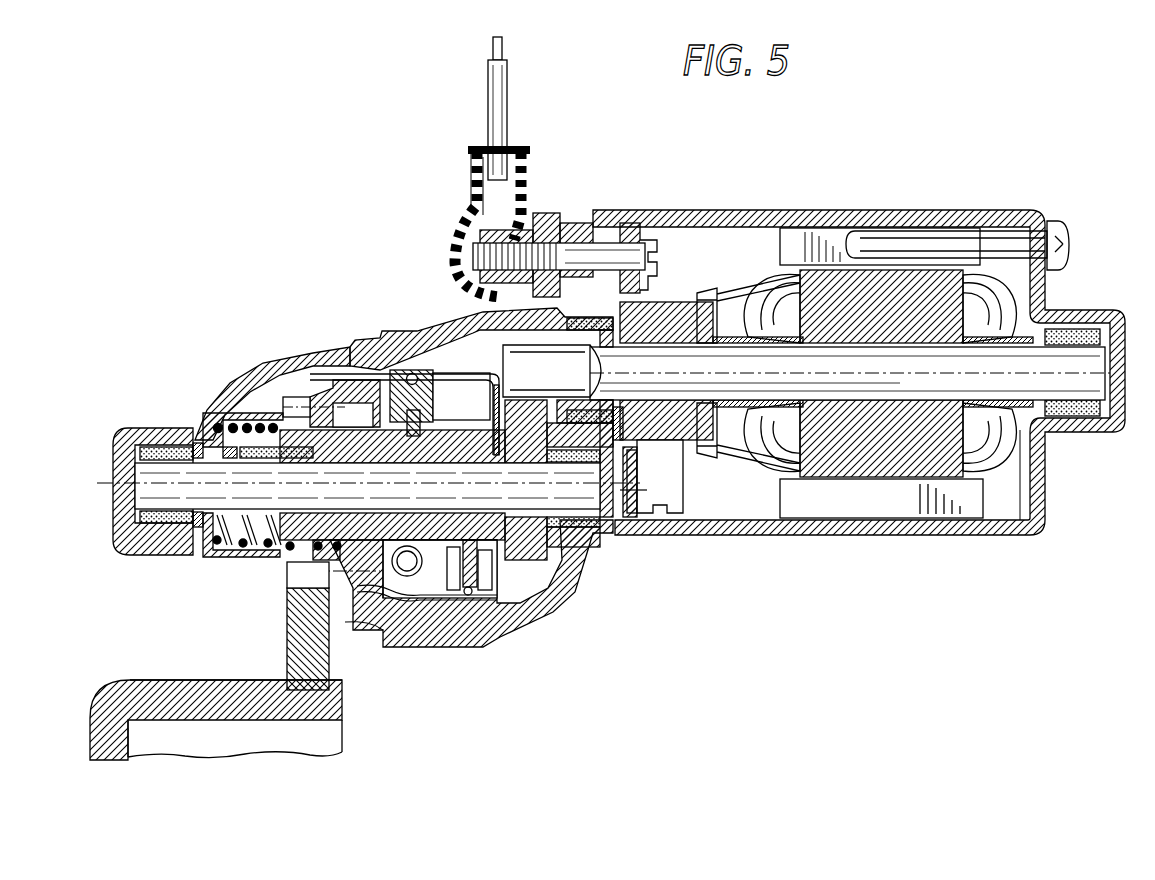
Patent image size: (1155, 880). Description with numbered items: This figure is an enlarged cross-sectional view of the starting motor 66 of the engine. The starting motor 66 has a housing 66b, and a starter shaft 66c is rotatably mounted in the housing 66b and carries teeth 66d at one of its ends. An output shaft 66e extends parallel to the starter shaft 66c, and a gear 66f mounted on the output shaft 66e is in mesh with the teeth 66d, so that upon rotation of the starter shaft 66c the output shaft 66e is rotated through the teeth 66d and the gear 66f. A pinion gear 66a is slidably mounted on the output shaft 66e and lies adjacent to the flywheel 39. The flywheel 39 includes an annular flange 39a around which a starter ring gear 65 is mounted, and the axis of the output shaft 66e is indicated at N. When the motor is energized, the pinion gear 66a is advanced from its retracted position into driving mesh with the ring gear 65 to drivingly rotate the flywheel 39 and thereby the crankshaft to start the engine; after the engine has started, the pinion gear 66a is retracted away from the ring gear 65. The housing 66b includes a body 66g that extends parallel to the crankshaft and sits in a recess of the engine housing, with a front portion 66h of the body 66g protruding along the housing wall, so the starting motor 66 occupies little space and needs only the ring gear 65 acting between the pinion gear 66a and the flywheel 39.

The starting motor 66 is at (368, 338).
The pinion gear 66a is at (352, 592).
The housing 66b is at (678, 206).
The starter shaft 66c is at (878, 386).
The teeth 66d is at (462, 312).
The output shaft 66e is at (151, 470).
The gear 66f is at (525, 557).
The body 66g is at (880, 214).
The front portion 66h is at (232, 378).
The starter ring gear 65 is at (302, 615).
The flywheel 39 is at (192, 677).
The annular flange 39a is at (243, 693).
The axis N is at (371, 486).